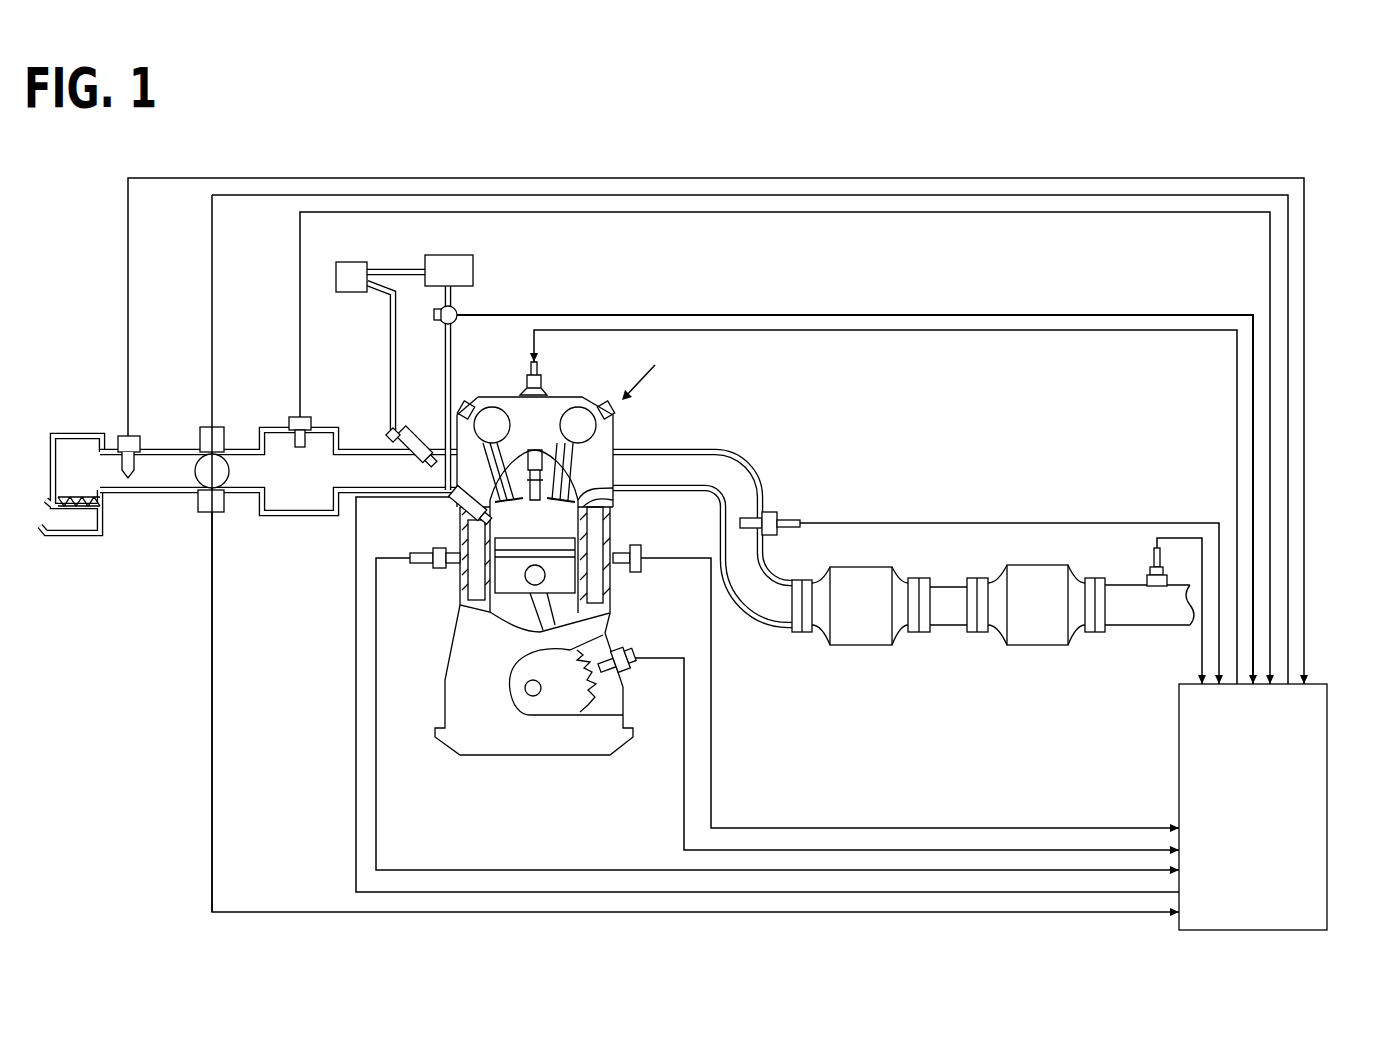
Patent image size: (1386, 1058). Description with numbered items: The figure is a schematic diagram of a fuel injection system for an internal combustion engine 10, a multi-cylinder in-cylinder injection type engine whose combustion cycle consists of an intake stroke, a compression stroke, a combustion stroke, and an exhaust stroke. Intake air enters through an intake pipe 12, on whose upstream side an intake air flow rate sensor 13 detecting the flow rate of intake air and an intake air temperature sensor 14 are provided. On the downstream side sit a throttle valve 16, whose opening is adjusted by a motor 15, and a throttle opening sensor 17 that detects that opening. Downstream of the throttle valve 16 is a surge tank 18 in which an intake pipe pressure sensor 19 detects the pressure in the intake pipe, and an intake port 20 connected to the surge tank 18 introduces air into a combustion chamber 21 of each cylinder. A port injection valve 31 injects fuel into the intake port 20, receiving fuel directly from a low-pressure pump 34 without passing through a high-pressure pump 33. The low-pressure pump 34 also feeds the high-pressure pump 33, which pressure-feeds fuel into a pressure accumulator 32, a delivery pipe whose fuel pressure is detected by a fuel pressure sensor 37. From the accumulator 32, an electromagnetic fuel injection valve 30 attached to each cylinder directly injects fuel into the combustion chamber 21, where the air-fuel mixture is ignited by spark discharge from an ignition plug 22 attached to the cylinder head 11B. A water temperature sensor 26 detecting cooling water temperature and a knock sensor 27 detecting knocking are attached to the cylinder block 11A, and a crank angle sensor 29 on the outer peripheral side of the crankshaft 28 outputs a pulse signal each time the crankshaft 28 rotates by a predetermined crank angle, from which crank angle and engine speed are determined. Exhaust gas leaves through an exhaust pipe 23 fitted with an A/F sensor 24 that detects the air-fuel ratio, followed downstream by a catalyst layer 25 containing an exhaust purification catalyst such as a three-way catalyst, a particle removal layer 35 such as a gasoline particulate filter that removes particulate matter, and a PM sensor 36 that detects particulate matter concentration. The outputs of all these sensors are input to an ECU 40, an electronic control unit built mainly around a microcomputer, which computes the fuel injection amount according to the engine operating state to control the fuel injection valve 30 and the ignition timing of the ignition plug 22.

The internal combustion engine 10 is at (538, 573).
The cylinder block 11A is at (448, 680).
The cylinder head 11B is at (505, 395).
The intake pipe 12 is at (158, 447).
The intake air flow rate sensor 13 is at (112, 438).
The intake air temperature sensor 14 is at (118, 437).
The motor 15 is at (203, 427).
The throttle valve 16 is at (193, 468).
The throttle opening sensor 17 is at (217, 513).
The surge tank 18 is at (298, 514).
The intake pipe pressure sensor 19 is at (290, 418).
The intake port 20 is at (358, 450).
The combustion chamber 21 is at (622, 530).
The ignition plug 22 is at (552, 453).
The exhaust pipe 23 is at (700, 450).
The A/F sensor 24 is at (777, 510).
The catalyst layer 25 is at (848, 657).
The water temperature sensor 26 is at (440, 568).
The knock sensor 27 is at (642, 573).
The crankshaft 28 is at (532, 697).
The crank angle sensor 29 is at (638, 670).
The fuel injection valve 30 is at (450, 510).
The port injection valve 31 is at (405, 440).
The pressure accumulator 32 is at (457, 312).
The high-pressure pump 33 is at (453, 256).
The low-pressure pump 34 is at (350, 293).
The particle removal layer 35 is at (1032, 657).
The PM sensor 36 is at (1152, 560).
The fuel pressure sensor 37 is at (436, 316).
The ECU 40 is at (1329, 708).